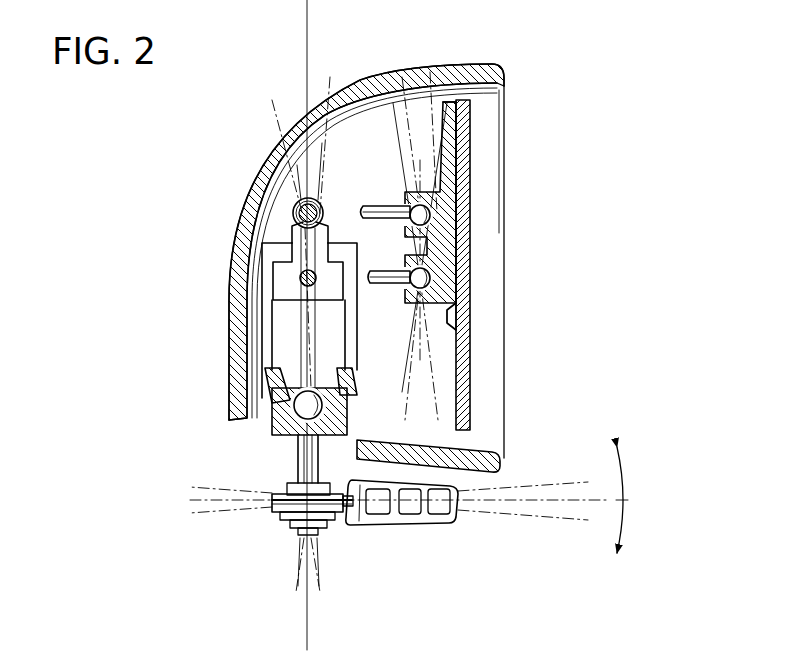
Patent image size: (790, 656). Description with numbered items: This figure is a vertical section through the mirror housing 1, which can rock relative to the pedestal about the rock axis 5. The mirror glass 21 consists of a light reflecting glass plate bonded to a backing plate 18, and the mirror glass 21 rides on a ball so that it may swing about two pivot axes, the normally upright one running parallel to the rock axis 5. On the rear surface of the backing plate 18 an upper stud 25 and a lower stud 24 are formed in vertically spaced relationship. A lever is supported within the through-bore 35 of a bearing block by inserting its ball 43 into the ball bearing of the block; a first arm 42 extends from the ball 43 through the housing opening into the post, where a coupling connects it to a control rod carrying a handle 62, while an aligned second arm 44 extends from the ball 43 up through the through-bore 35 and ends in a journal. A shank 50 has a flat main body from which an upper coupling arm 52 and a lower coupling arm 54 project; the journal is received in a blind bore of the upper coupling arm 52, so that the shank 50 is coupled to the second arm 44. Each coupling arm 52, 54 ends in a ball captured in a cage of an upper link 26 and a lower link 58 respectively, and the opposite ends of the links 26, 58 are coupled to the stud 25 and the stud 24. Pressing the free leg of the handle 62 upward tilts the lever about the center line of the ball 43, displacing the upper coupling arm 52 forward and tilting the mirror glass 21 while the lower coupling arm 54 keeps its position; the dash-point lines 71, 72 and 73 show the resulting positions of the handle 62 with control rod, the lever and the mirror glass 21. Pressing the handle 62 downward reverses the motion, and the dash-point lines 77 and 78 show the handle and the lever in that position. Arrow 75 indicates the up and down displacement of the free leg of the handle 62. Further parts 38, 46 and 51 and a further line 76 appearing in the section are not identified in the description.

The mirror housing 1 is at (371, 66).
The rock axis 5 is at (305, 22).
The backing plate 18 is at (450, 100).
The mirror glass 21 is at (471, 124).
The lower stud 24 is at (458, 238).
The upper stud 25 is at (440, 178).
The upper link 26 is at (380, 205).
The through-bore 35 is at (350, 372).
The bracket frame 38 is at (287, 325).
The first arm 42 is at (305, 466).
The ball 43 is at (285, 420).
The second arm 44 is at (300, 340).
The ball 46 is at (300, 407).
The shank 50 is at (290, 232).
The carrier 51 is at (280, 267).
The upper coupling arm 52 is at (293, 208).
The lower coupling arm 54 is at (300, 282).
The lower link 58 is at (385, 286).
The handle 62 is at (410, 525).
The dash-point imaginary line 71 is at (555, 486).
The dash-point imaginary line 72 is at (350, 590).
The dash-point imaginary line 73 is at (405, 98).
The arrow 75 is at (622, 500).
The pivot axis 76 is at (546, 520).
The dash-point imaginary line 77 is at (248, 579).
The dash-point imaginary line 78 is at (433, 100).